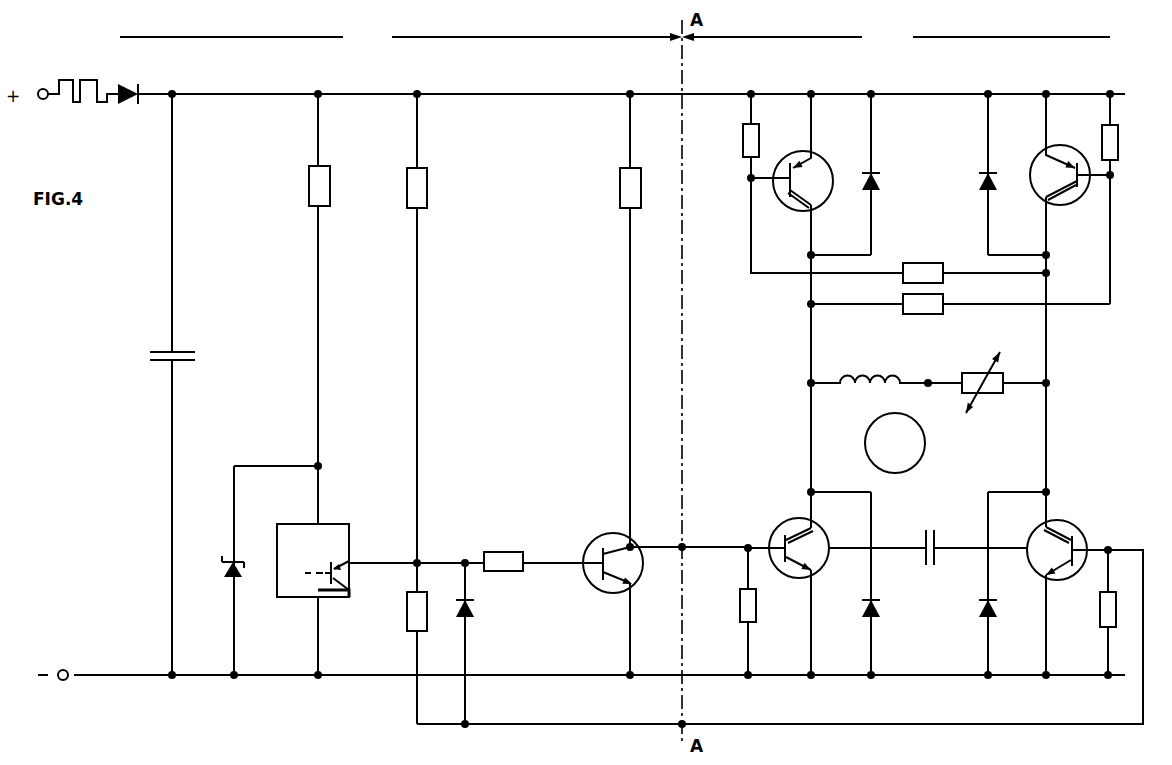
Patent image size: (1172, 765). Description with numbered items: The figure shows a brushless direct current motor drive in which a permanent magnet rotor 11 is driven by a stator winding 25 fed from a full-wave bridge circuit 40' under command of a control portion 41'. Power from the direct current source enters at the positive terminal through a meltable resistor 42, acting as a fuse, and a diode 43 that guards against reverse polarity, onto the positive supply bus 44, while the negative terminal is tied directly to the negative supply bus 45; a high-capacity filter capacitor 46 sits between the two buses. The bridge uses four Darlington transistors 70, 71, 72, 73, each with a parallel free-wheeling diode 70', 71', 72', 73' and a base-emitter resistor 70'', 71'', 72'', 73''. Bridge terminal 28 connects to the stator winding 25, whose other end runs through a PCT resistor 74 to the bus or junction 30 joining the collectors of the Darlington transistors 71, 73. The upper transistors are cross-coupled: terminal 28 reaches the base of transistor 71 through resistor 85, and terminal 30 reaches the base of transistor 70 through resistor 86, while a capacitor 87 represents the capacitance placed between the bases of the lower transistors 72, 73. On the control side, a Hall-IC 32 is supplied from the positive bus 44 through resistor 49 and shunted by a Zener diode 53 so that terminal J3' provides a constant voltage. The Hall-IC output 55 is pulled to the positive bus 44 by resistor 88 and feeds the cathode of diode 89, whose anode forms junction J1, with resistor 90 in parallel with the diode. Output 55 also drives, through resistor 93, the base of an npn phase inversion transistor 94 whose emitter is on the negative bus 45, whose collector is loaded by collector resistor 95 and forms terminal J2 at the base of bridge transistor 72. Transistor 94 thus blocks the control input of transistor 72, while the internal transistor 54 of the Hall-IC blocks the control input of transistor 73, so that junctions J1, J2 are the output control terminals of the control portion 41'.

The rotor 11 is at (925, 449).
The stator winding 25 is at (862, 376).
The bridge terminal 28 is at (813, 381).
The bus or junction 30 is at (1048, 383).
The Hall-IC 32 is at (298, 525).
The full-wave bridge circuit 40' is at (896, 39).
The control portion 41' is at (401, 39).
The meltable resistor 42 is at (92, 81).
The diode 43 is at (131, 84).
The positive supply bus 44 is at (492, 93).
The negative supply bus 45 is at (131, 675).
The filter capacitor 46 is at (150, 356).
The resistor 49 is at (312, 187).
The Zener diode 53 is at (226, 580).
The internal transistor 54 is at (337, 566).
The output 55 is at (370, 564).
The Darlington transistor 70 is at (805, 174).
The free-wheeling diode 70' is at (863, 172).
The base-emitter resistor 70'' is at (731, 136).
The Darlington transistor 71 is at (1063, 174).
The free-wheeling diode 71' is at (994, 172).
The base-emitter resistor 71'' is at (1130, 197).
The Darlington transistor 72 is at (800, 594).
The free-wheeling diode 72' is at (888, 585).
The base-emitter resistor 72'' is at (766, 613).
The Darlington transistor 73 is at (1069, 593).
The free-wheeling diode 73' is at (1004, 585).
The base-emitter resistor 73'' is at (1085, 614).
The PCT resistor 74 is at (992, 395).
The resistor 85 is at (922, 314).
The resistor 86 is at (926, 263).
The capacitor 87 is at (934, 545).
The resistor 88 is at (420, 188).
The diode 89 is at (470, 614).
The resistor 90 is at (410, 615).
The resistor 93 is at (504, 552).
The npn transistor 94 is at (606, 543).
The collector resistor 95 is at (620, 190).
The junction J1 is at (685, 724).
The terminal J2 is at (684, 547).
The terminal J3' is at (295, 456).